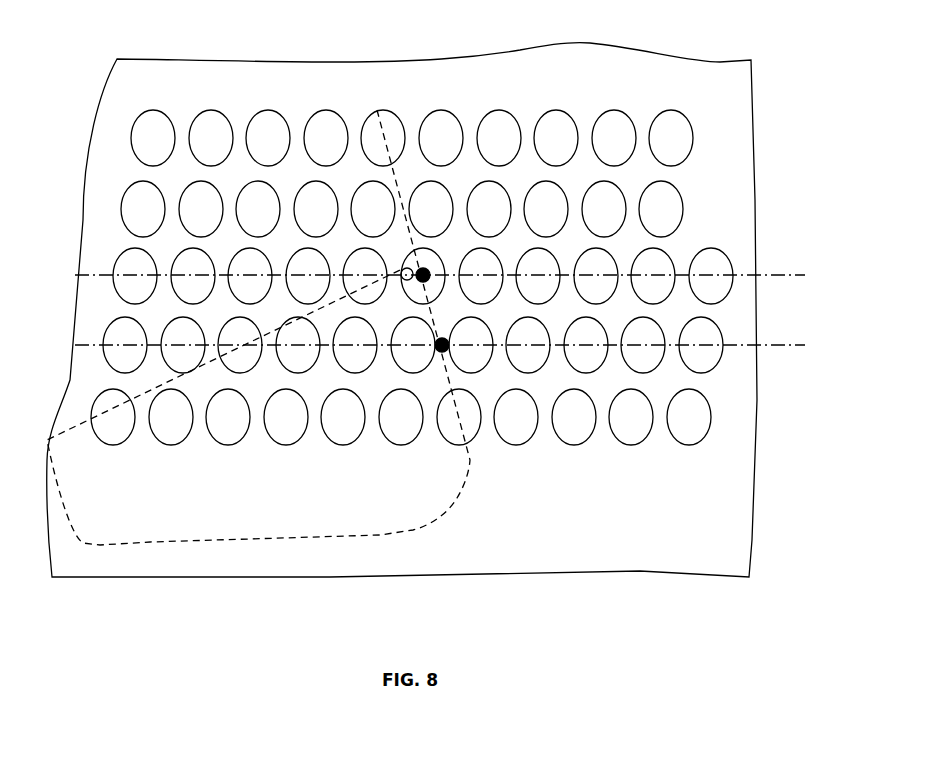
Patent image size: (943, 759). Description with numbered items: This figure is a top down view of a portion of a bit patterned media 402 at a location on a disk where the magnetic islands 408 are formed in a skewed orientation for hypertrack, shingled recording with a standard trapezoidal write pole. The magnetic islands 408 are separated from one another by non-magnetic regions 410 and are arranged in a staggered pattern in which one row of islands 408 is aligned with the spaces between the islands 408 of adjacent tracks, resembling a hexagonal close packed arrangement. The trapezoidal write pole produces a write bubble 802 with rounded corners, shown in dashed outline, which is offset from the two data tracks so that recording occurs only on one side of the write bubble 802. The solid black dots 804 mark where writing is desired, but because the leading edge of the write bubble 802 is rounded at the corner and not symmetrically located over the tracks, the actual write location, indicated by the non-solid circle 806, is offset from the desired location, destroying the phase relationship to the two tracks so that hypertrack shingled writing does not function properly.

The patterned magnetic media 402 is at (223, 58).
The magnetic island 408 is at (203, 117).
The non-magnetic region 410 is at (297, 127).
The write bubble 802 is at (458, 499).
The solid black dot 804 is at (428, 268).
The non-solid circle 806 is at (401, 268).